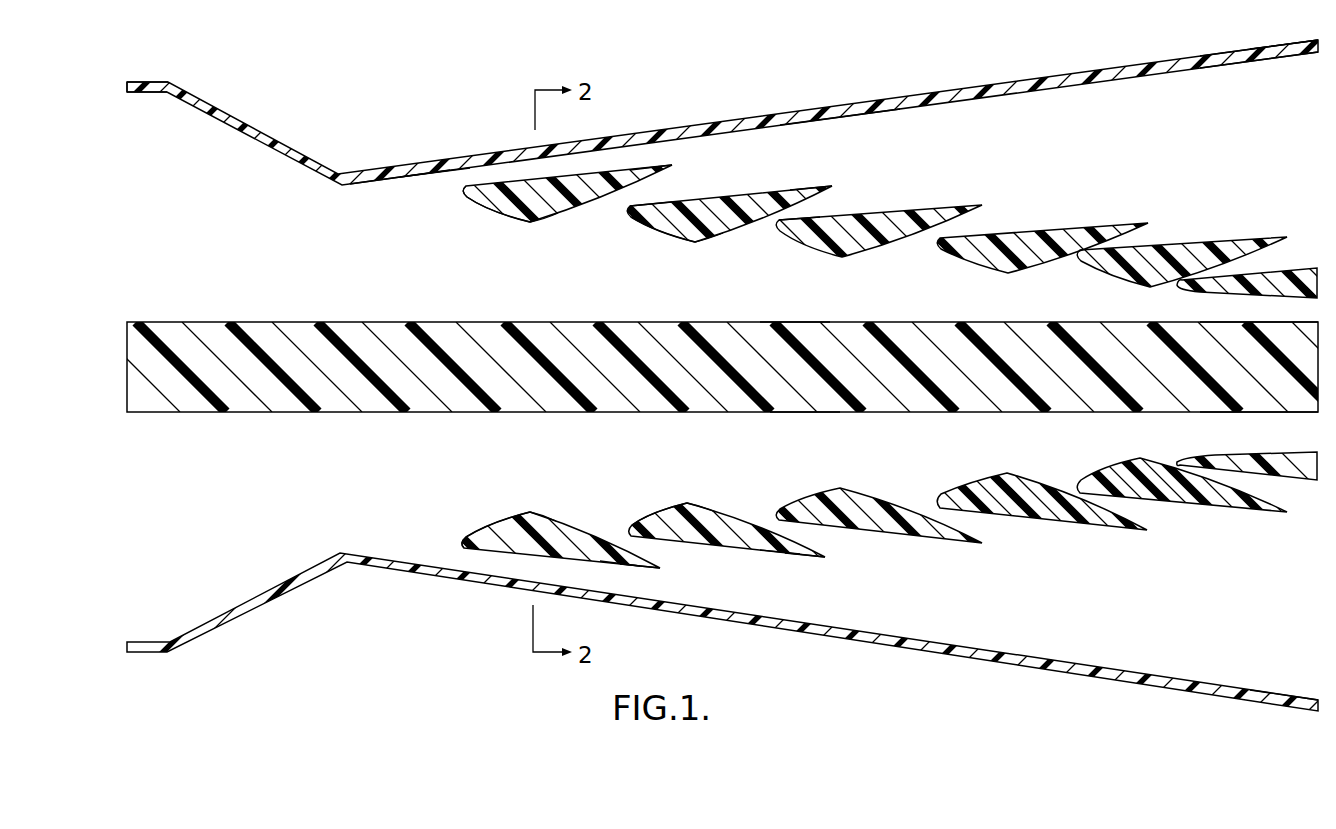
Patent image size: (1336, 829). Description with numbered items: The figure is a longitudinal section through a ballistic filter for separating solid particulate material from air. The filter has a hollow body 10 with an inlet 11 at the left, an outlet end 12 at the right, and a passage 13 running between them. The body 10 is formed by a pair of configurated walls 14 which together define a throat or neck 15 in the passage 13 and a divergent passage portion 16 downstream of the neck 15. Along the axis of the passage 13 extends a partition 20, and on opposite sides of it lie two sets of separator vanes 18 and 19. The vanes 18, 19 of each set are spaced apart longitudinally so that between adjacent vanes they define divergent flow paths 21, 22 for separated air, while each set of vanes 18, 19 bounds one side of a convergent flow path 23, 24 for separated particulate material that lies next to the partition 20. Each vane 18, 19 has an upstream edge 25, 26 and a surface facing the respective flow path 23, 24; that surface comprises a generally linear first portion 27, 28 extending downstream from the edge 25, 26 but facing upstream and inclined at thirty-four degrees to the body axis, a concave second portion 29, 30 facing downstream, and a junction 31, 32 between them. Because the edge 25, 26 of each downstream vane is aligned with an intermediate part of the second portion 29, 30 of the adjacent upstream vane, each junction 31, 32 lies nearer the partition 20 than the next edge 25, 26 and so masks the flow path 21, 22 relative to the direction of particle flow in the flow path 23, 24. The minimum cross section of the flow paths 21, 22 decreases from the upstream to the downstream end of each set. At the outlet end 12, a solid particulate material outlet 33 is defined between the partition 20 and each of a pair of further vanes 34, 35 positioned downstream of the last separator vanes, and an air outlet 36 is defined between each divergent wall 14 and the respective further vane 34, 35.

The hollow body 10 is at (878, 100).
The inlet 11 is at (152, 124).
The outlet end 12 is at (1250, 88).
The passage 13 is at (432, 190).
The configurated walls 14 is at (700, 128).
The throat or neck 15 is at (376, 190).
The divergent passage portion 16 is at (803, 127).
The separator vanes 18 is at (562, 202).
The separator vanes 19 is at (633, 566).
The partition 20 is at (480, 337).
The flow path 21 is at (660, 193).
The flow path 22 is at (660, 557).
The flow path 23 is at (809, 309).
The flow path 24 is at (817, 457).
The upstream edge 25 is at (466, 189).
The upstream edge 26 is at (462, 548).
The first portion 27 is at (497, 203).
The first portion 28 is at (496, 528).
The second portion 29 is at (636, 186).
The second portion 30 is at (590, 538).
The junction 31 is at (530, 223).
The junction 32 is at (533, 511).
The particulate material outlet 33 is at (1310, 311).
The further vane 34 is at (1305, 276).
The further vane 35 is at (1307, 480).
The air outlet 36 is at (1310, 158).